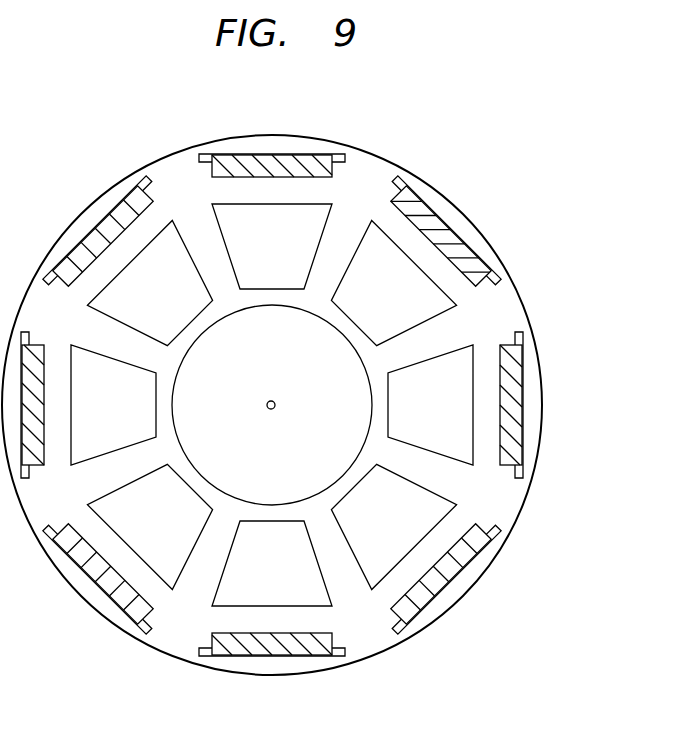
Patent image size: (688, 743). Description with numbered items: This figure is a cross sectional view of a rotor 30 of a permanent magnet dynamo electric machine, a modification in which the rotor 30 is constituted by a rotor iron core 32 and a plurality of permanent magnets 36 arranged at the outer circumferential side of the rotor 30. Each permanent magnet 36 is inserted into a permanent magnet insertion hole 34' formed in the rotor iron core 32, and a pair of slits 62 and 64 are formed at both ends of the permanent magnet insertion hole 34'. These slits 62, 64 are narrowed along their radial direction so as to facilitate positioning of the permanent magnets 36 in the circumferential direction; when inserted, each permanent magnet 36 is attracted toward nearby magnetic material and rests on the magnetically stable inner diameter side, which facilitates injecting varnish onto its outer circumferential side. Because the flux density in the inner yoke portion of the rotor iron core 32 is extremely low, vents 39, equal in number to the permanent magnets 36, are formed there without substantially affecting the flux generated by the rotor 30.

The rotor 30 is at (557, 223).
The rotor iron core 32 is at (440, 333).
The permanent magnet insertion hole 34' is at (312, 371).
The permanent magnet 36 is at (238, 167).
The vent 39 is at (377, 568).
The slit 62 is at (204, 158).
The slit 64 is at (348, 158).